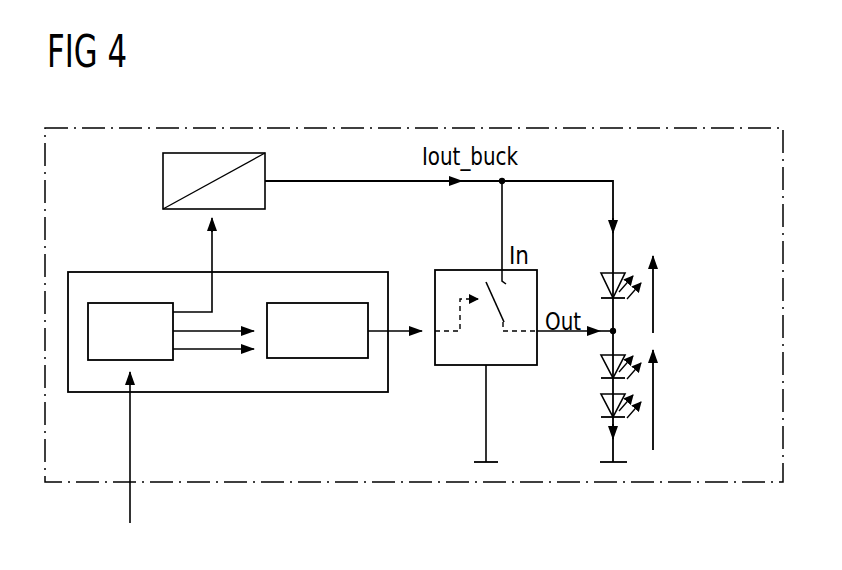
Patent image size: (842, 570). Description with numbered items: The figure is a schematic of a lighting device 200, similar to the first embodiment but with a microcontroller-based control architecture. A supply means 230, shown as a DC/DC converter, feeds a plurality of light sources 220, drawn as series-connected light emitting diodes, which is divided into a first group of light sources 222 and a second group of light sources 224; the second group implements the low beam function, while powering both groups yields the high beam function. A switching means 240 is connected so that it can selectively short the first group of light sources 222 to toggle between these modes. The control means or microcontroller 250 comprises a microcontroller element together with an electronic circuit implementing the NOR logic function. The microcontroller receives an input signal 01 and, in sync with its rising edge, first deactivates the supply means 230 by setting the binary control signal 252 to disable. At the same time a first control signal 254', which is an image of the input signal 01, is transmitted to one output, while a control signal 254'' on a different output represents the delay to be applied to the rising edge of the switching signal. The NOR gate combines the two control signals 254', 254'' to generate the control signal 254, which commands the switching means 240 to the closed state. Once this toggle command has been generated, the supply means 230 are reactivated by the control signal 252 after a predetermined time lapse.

The device 200 is at (430, 128).
The supply means 230 is at (160, 183).
The control signal 252 is at (224, 251).
The control means or microcontroller 250 is at (325, 268).
The first control signal 254' is at (216, 302).
The control signal 254'' is at (213, 395).
The control signal 254 is at (400, 302).
The switching means 240 is at (463, 262).
The first group of light sources 222 is at (636, 247).
The second group of light sources 224 is at (574, 394).
The plurality of light sources 220 is at (632, 324).
The input signal 01 is at (127, 499).